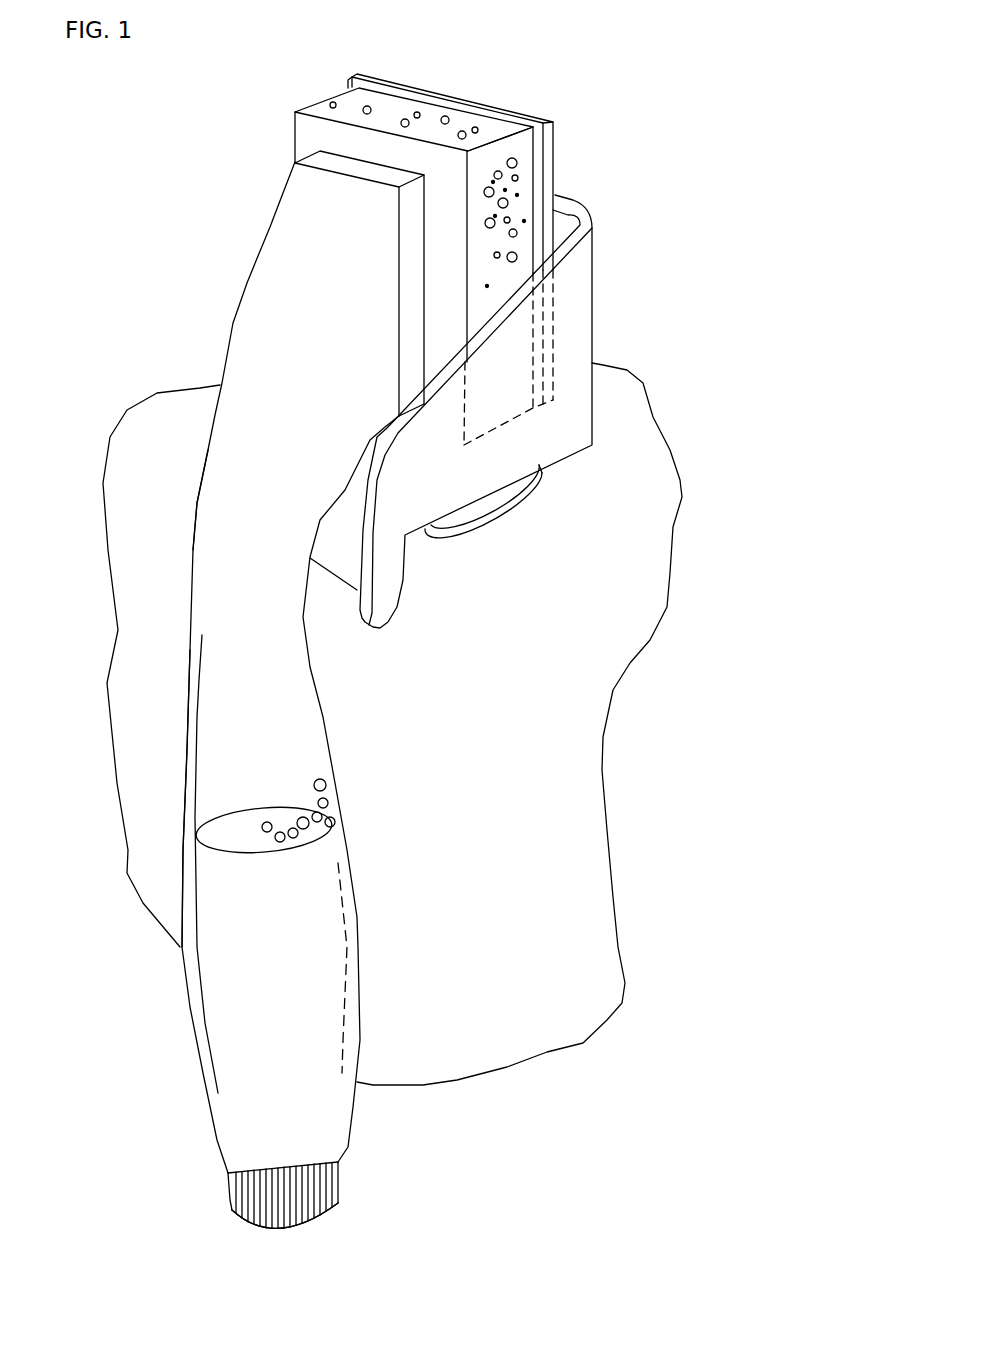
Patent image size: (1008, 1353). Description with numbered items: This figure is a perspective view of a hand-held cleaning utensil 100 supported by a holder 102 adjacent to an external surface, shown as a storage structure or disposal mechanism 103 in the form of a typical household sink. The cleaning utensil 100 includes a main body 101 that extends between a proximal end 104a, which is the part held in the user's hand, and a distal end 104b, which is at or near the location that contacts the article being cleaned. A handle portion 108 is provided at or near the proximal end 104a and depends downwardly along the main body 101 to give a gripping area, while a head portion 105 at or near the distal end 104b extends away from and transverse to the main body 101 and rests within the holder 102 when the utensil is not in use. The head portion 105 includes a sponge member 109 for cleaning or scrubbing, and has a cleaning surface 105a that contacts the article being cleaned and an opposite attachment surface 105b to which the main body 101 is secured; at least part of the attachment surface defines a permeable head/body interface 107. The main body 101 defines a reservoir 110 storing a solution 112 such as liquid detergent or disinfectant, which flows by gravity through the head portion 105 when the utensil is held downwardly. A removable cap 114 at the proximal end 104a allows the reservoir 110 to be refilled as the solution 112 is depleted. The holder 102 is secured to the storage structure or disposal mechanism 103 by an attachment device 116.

The cleaning utensil 100 is at (235, 320).
The main body 101 is at (197, 503).
The holder 102 is at (587, 268).
The storage structure or disposal mechanism 103 is at (497, 998).
The proximal end 104a is at (253, 1225).
The distal end 104b is at (445, 93).
The head portion 105 is at (525, 162).
The cleaning surface 105a is at (497, 98).
The attachment surface 105b is at (437, 340).
The permeable head/body interface 107 is at (297, 146).
The handle portion 108 is at (187, 800).
The sponge member 109 is at (370, 98).
The reservoir 110 is at (217, 698).
The solution 112 is at (278, 992).
The removable cap 114 is at (258, 1197).
The attachment device 116 is at (527, 508).